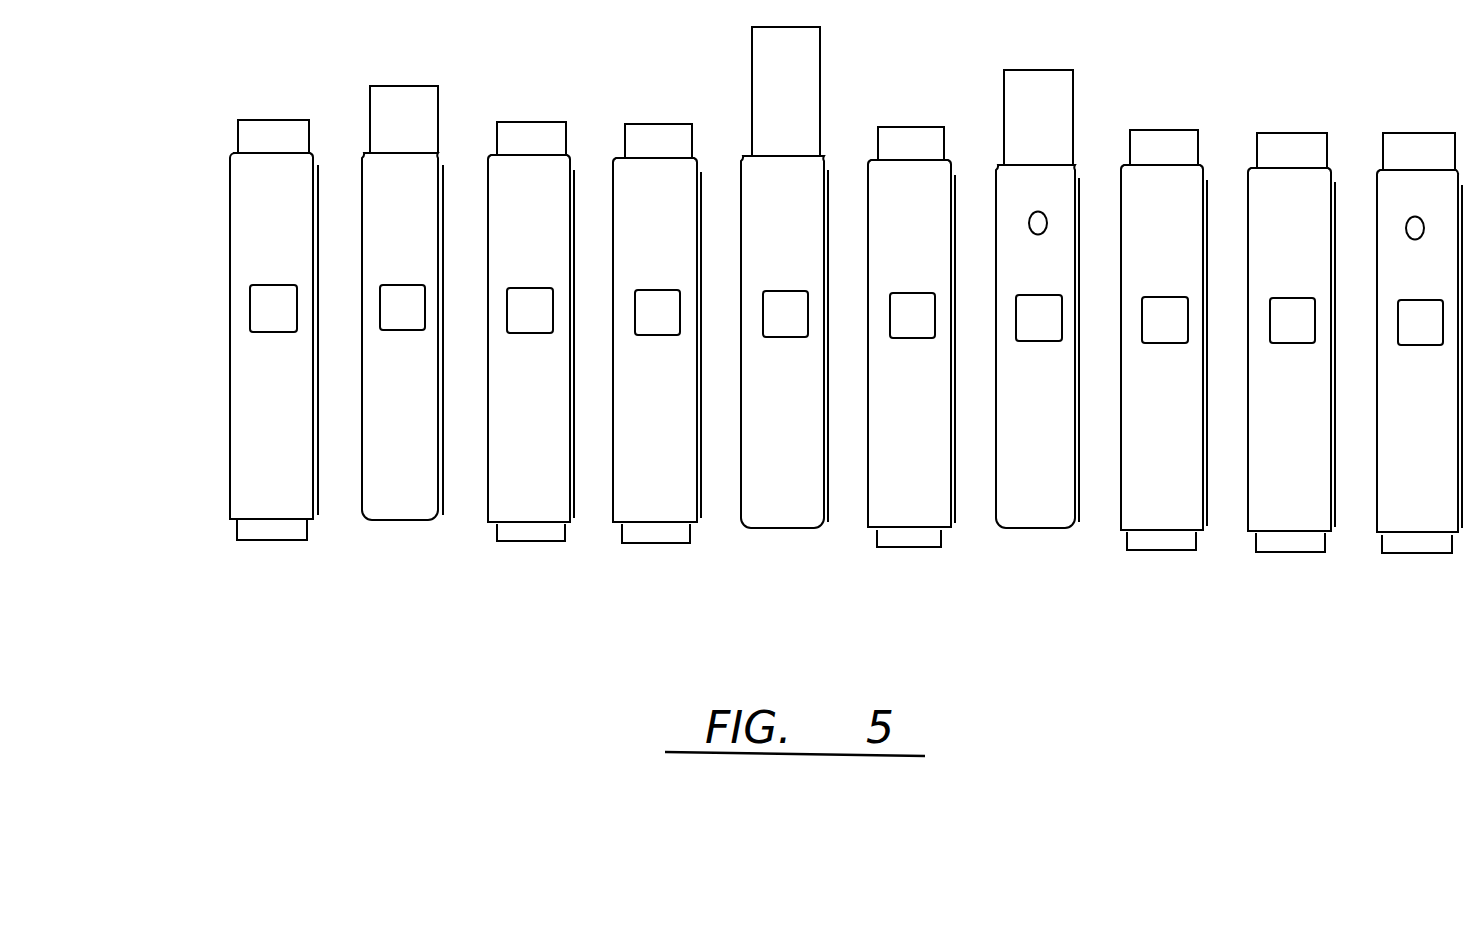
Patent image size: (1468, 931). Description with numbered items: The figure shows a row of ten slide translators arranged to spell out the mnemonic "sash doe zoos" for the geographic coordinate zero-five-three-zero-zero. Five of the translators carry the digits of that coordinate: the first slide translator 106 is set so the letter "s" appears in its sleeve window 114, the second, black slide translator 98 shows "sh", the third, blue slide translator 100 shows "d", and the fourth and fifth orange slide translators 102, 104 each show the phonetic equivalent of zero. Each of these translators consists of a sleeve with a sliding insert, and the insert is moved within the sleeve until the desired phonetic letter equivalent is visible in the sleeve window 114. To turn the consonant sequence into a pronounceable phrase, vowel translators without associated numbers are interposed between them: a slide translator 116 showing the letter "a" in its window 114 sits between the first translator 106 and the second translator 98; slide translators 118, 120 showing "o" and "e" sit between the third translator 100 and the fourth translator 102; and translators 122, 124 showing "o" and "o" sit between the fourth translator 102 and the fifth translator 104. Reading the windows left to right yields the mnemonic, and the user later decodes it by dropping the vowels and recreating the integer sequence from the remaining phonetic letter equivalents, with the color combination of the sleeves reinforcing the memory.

The black slide translator 98 is at (490, 560).
The blue slide translator 100 is at (615, 552).
The orange slide translator 102 is at (1040, 552).
The orange slide translator 104 is at (1426, 574).
The first slide translator 106 is at (240, 510).
The sleeve window 114 is at (414, 285).
The vowel slide translator 116 is at (362, 327).
The vowel slide translator 118 is at (780, 518).
The vowel slide translator 120 is at (897, 518).
The vowel slide translator 122 is at (1167, 572).
The vowel slide translator 124 is at (1291, 573).